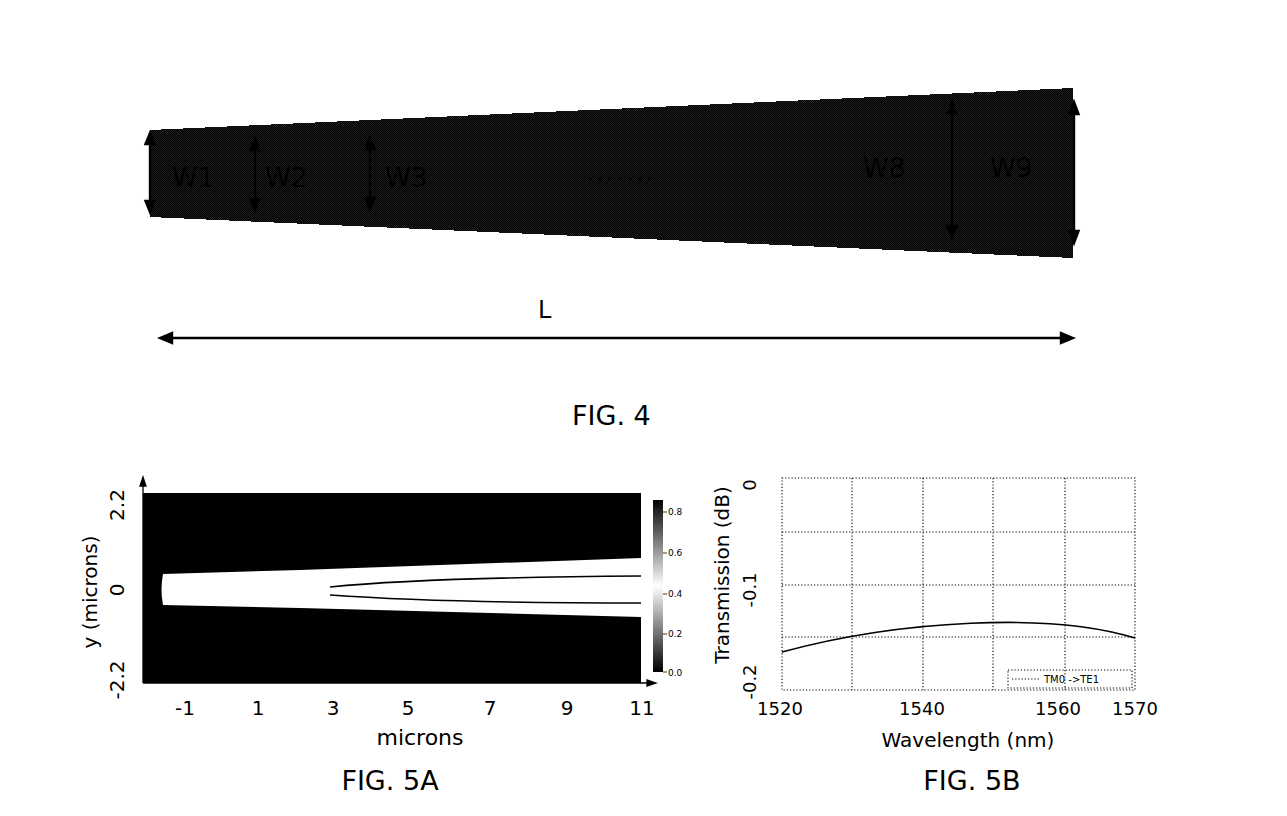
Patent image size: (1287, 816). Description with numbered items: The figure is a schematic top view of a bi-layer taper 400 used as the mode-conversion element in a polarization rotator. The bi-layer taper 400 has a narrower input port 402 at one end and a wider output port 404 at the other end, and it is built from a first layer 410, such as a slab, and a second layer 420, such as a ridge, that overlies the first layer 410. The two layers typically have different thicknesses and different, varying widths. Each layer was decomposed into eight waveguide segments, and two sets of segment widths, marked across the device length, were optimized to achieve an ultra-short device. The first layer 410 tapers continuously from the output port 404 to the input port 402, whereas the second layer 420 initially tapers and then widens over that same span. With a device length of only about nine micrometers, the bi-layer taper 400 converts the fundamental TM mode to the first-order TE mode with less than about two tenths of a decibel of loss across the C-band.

The bi-layer taper 400 is at (360, 86).
The input port 402 is at (145, 178).
The output port 404 is at (1075, 168).
The first layer 410 is at (392, 221).
The second layer 420 is at (552, 186).